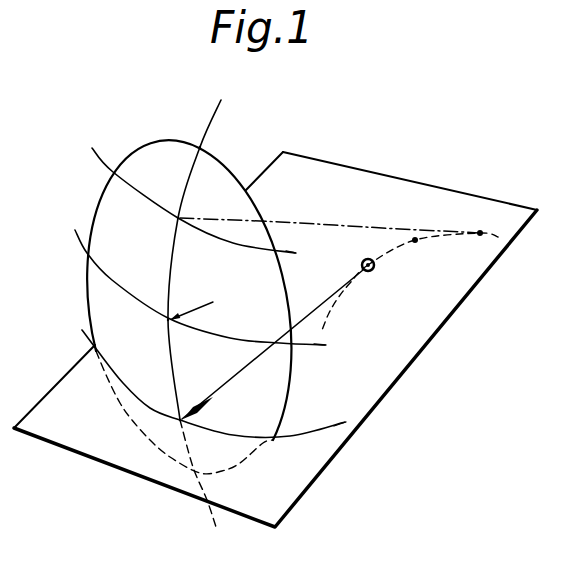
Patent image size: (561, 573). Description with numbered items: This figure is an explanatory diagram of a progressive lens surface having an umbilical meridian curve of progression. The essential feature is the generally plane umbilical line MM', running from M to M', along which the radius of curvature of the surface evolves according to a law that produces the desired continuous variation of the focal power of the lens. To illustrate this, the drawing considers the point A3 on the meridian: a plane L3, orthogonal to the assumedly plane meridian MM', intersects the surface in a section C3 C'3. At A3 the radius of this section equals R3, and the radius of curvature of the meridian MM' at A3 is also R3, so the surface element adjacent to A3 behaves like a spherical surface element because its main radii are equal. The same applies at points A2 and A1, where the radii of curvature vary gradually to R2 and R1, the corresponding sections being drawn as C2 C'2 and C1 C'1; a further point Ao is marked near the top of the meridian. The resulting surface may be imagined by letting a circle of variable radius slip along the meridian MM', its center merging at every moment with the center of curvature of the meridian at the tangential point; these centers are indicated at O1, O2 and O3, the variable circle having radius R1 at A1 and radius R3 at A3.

The plane orthogonal to the meridian L3 is at (275, 339).
The end of umbilical meridian line M is at (207, 251).
The end of umbilical meridian line M' is at (202, 485).
The circle C1 is at (193, 193).
The end point of circle C1 C'1 is at (309, 249).
The circle C2 is at (193, 276).
The end point of circle C2 C'2 is at (334, 340).
The section of the surface C3 is at (201, 383).
The section of the surface C'3 is at (335, 413).
The point Ao on meridian Ao is at (213, 143).
The point on the meridian A1 is at (162, 225).
The point on the meridian A2 is at (152, 328).
The point on the meridian A3 is at (163, 430).
The radius of curvature R1 is at (330, 218).
The radius of curvature R2 is at (194, 302).
The radius of curvature R3 is at (272, 344).
The center O1 is at (456, 225).
The center O2 is at (404, 253).
The center O3 is at (350, 283).